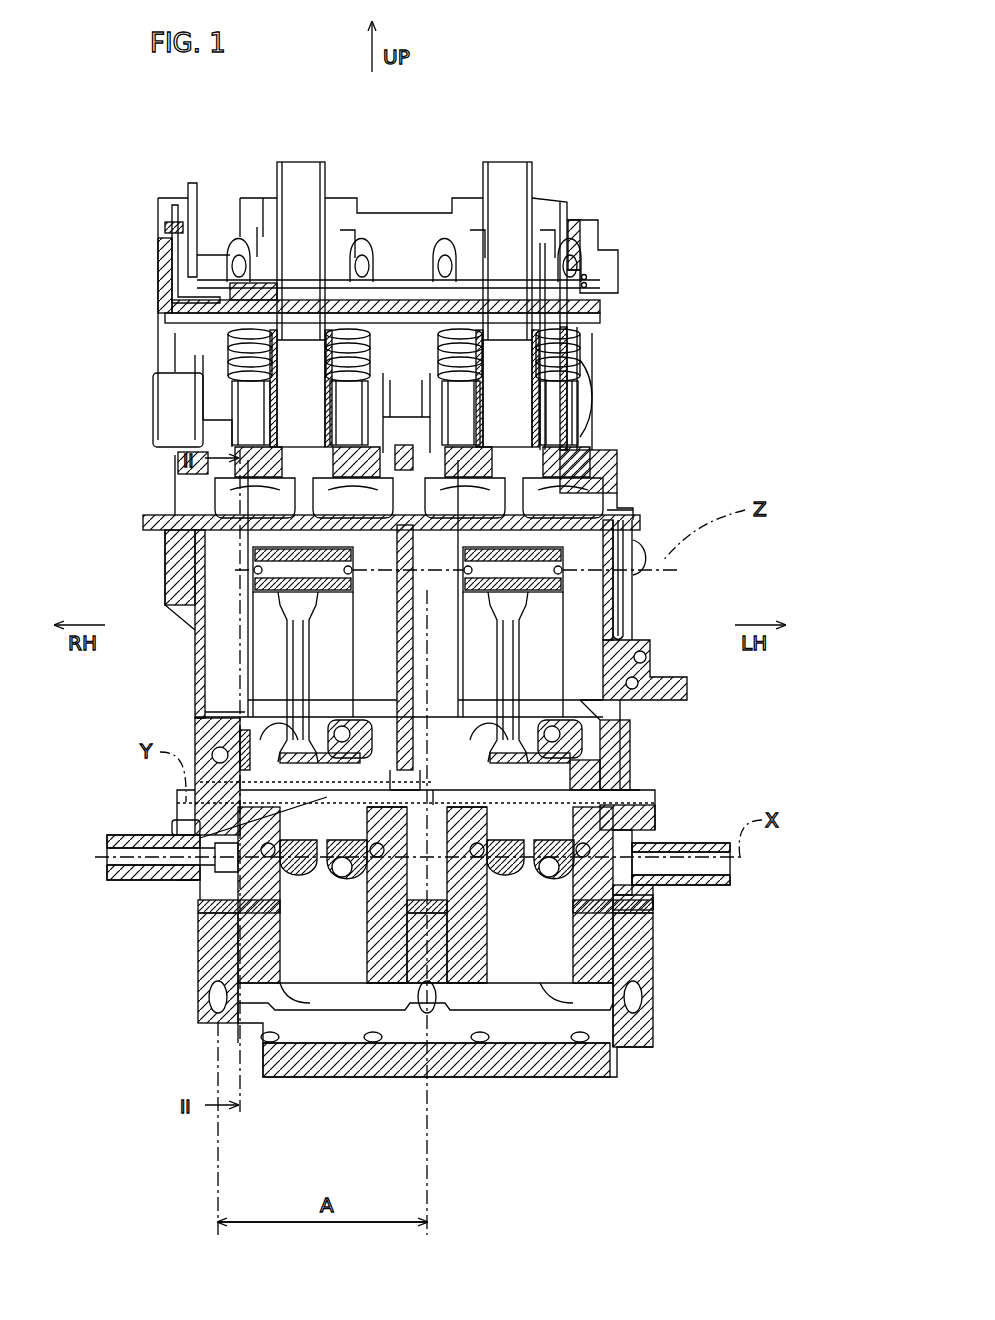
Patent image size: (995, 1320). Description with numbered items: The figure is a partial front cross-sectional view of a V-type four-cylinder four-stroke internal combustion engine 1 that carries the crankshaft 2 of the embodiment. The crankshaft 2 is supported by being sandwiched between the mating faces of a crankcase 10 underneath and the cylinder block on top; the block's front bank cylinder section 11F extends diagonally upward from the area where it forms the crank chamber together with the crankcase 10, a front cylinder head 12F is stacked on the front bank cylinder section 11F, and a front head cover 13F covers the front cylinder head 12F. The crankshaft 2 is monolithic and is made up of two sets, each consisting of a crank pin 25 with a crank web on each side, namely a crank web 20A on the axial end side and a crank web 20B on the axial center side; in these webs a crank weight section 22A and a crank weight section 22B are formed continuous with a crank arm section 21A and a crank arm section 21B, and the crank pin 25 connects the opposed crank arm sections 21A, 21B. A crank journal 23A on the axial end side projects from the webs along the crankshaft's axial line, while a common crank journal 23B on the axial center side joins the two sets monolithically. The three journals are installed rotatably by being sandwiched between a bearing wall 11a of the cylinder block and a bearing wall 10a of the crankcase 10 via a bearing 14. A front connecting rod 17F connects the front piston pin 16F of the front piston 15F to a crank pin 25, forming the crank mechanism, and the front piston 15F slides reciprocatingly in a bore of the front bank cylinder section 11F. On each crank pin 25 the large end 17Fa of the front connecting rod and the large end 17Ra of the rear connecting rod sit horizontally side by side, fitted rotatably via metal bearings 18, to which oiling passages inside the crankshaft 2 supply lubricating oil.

The internal combustion engine 1 is at (456, 136).
The crankshaft 2 is at (140, 835).
The crankcase 10 is at (640, 1050).
The bearing wall of the crankcase 10a is at (198, 945).
The bearing wall of the cylinder block 11a is at (200, 742).
The front bank cylinder section 11F is at (632, 607).
The front cylinder head 12F is at (577, 437).
The front head cover 13F is at (568, 203).
The bearing 14 is at (198, 905).
The front piston 15F is at (397, 647).
The front piston pin 16F is at (323, 593).
The front connecting rod 17F is at (312, 631).
The large end of the front connecting rod 17Fa is at (285, 945).
The large end of the rear connecting rod 17Ra is at (282, 880).
The metal bearing 18 is at (305, 745).
The crank arm section on the axial end side 21A is at (205, 713).
The crank arm section on the axial center side 21B is at (415, 760).
The crank journal on the axial end side 23A is at (197, 823).
The crank journal on the axial center side 23B is at (635, 888).
The crank pin 25 is at (553, 730).
The crank weight section on the axial end side 22A is at (232, 1043).
The crank weight section on the axial center side 22B is at (383, 987).
The crank web on the axial end side 20A is at (448, 1087).
The crank web on the axial center side 20B is at (436, 999).